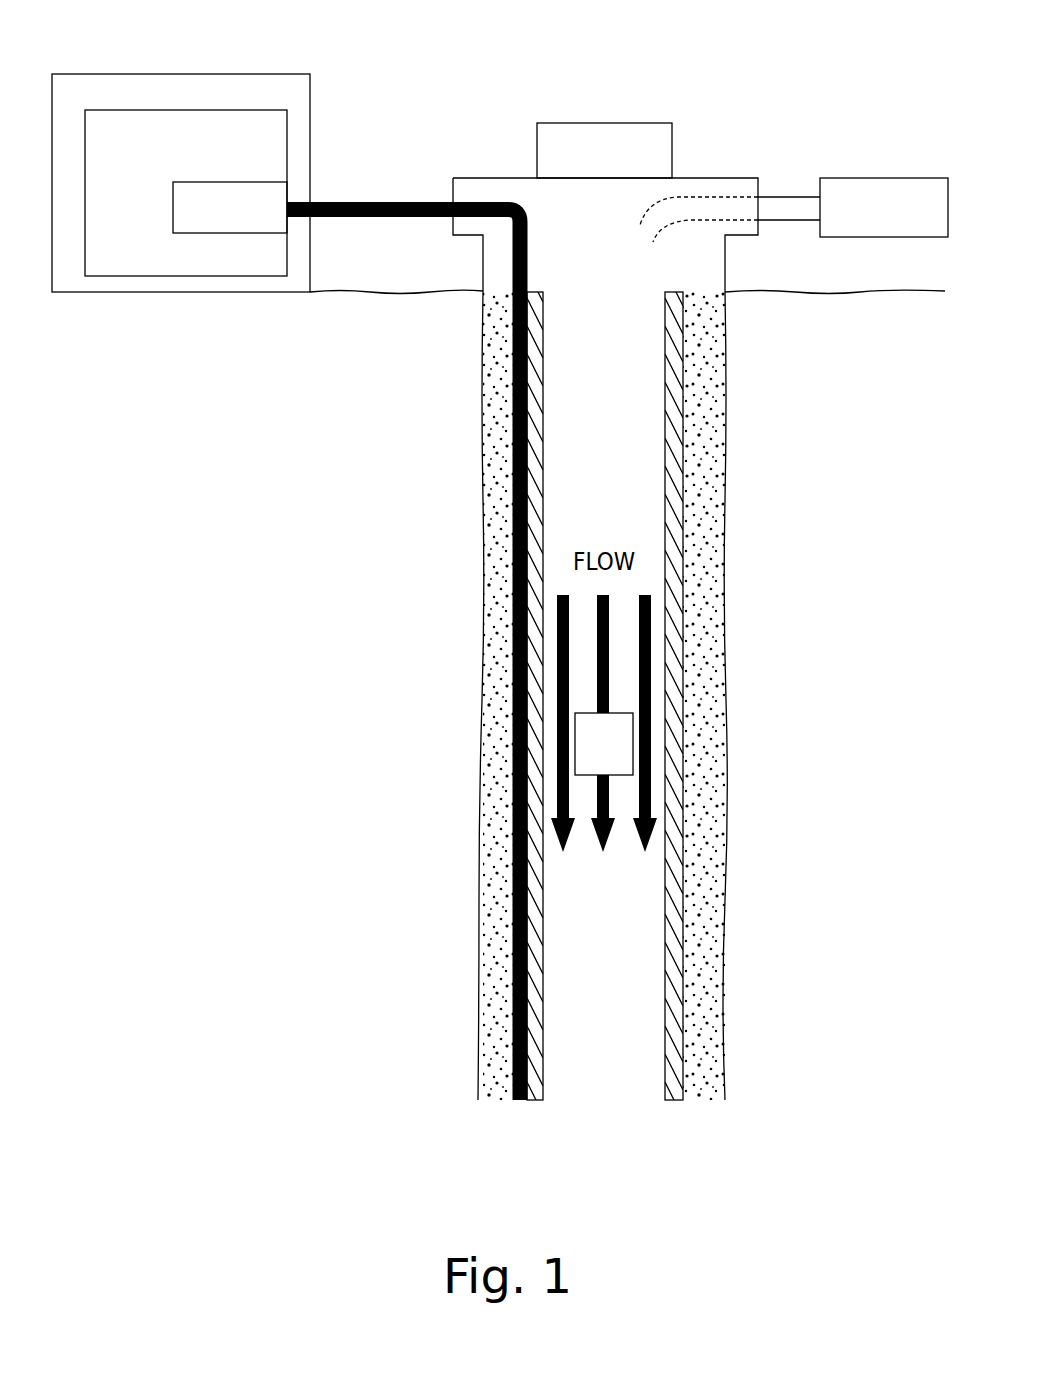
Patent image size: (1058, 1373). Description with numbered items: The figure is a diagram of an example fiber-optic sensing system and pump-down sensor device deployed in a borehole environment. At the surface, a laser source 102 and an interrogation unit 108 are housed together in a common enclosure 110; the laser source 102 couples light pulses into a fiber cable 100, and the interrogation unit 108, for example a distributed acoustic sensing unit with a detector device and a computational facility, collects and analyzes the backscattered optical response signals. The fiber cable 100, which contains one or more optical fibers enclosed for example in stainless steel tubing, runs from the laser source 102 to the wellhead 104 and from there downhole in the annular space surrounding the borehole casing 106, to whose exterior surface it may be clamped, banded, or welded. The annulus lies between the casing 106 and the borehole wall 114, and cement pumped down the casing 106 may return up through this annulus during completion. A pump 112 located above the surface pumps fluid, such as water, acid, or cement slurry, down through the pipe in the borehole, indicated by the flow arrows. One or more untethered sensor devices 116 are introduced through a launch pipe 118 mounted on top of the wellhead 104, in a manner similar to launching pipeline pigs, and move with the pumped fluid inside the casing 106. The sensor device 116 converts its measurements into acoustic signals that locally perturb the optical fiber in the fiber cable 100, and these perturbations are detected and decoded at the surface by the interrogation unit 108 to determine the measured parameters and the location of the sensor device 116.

The fiber cable 100 is at (517, 478).
The laser source 102 is at (238, 233).
The wellhead 104 is at (508, 178).
The borehole casing 106 is at (528, 680).
The interrogation unit 108 is at (147, 277).
The common enclosure 110 is at (182, 73).
The pump 112 is at (878, 178).
The borehole wall 114 is at (485, 810).
The untethered sensor device 116 is at (620, 747).
The launch pipe 118 is at (605, 123).